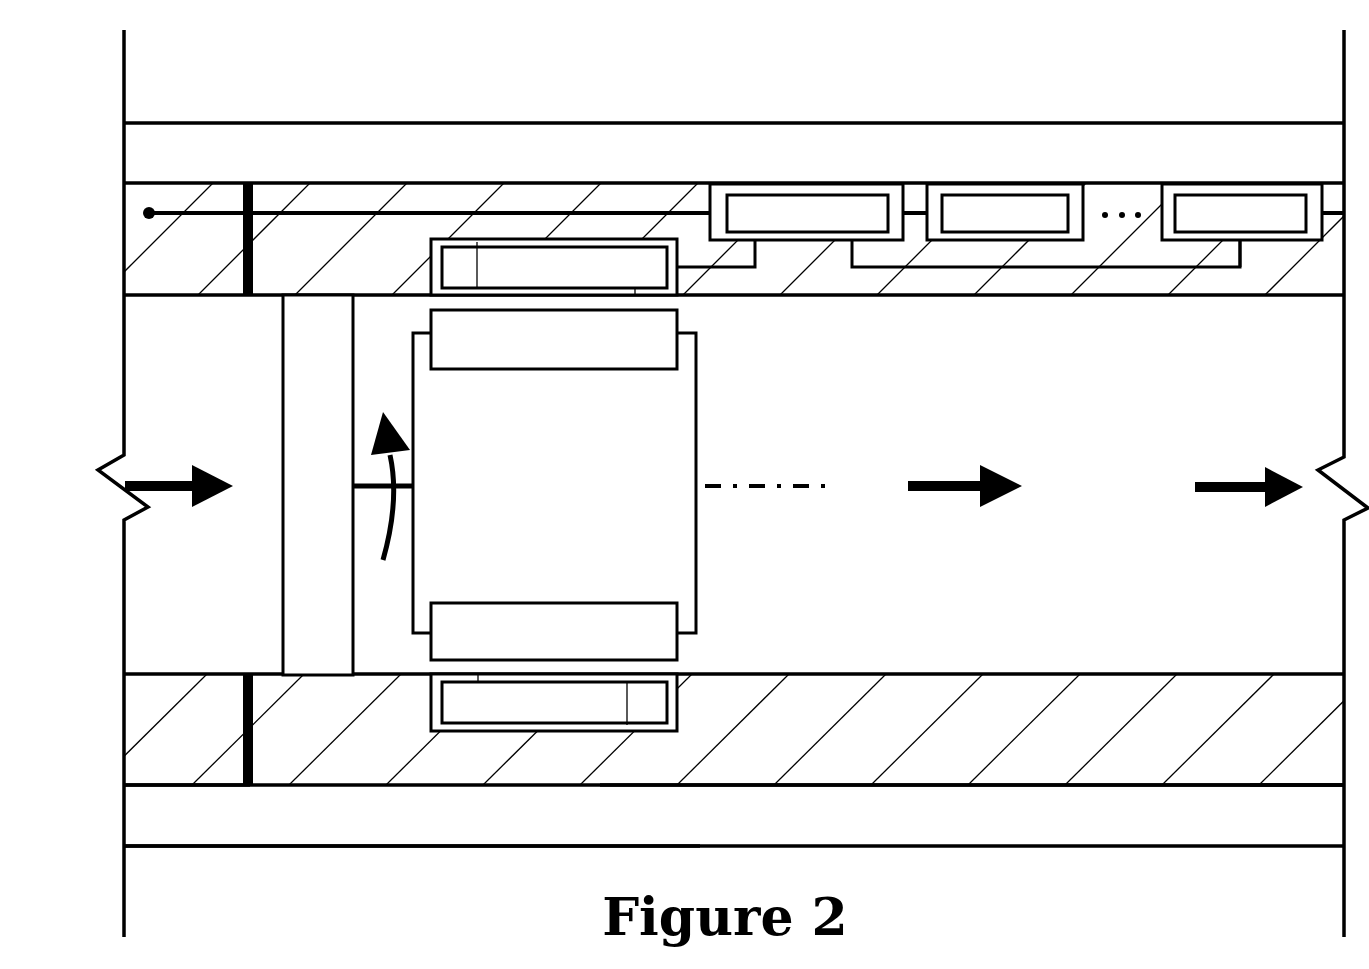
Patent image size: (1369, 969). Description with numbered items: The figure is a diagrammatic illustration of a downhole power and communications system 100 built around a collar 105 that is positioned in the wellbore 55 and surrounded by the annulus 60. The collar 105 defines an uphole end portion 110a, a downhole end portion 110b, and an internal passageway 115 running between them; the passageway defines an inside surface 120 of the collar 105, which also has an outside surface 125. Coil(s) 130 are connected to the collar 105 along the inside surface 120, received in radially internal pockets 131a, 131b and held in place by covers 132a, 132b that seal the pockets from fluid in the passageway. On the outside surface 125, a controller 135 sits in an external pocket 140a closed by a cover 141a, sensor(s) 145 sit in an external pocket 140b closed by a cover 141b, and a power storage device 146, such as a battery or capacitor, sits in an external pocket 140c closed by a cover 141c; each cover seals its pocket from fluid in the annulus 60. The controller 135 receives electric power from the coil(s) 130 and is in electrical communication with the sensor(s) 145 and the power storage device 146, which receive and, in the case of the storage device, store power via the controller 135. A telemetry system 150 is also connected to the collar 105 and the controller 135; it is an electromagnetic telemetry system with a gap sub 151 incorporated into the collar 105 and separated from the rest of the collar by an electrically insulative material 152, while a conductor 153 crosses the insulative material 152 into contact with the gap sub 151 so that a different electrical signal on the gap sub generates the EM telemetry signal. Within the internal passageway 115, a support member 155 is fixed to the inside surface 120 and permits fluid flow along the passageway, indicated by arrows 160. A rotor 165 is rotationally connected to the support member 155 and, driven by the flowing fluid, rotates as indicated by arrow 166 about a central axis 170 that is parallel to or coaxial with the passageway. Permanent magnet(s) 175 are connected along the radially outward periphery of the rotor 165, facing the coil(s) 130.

The downhole power system 100 is at (228, 81).
The annulus 60 is at (597, 152).
The wellbore 55 is at (378, 843).
The collar 105 is at (358, 183).
The uphole end portion 110a is at (155, 787).
The downhole end portion 110b is at (1288, 787).
The internal passageway 115 is at (989, 578).
The inside surface 120 is at (911, 674).
The outside surface 125 is at (918, 787).
The coil(s) 130 is at (500, 242).
The internal pocket 131a is at (477, 242).
The internal pocket 131b is at (627, 725).
The cover 132a is at (635, 295).
The cover 132b is at (478, 673).
The controller 135 is at (740, 195).
The external pocket 140a is at (825, 240).
The external pocket 140b is at (1018, 240).
The external pocket 140c is at (1283, 240).
The cover 141a is at (860, 183).
The cover 141b is at (1053, 183).
The cover 141c is at (1302, 183).
The sensor(s) 145 is at (948, 195).
The power storage device 146 is at (1187, 195).
The telemetry system 150 is at (183, 274).
The gap sub 151 is at (168, 183).
The electrically insulative material 152 is at (253, 268).
The conductor 153 is at (230, 210).
The support member 155 is at (283, 617).
The arrows 160 is at (168, 490).
The rotor 165 is at (696, 402).
The arrow 166 is at (397, 507).
The central axis 170 is at (765, 490).
The permanent magnet(s) 175 is at (682, 322).